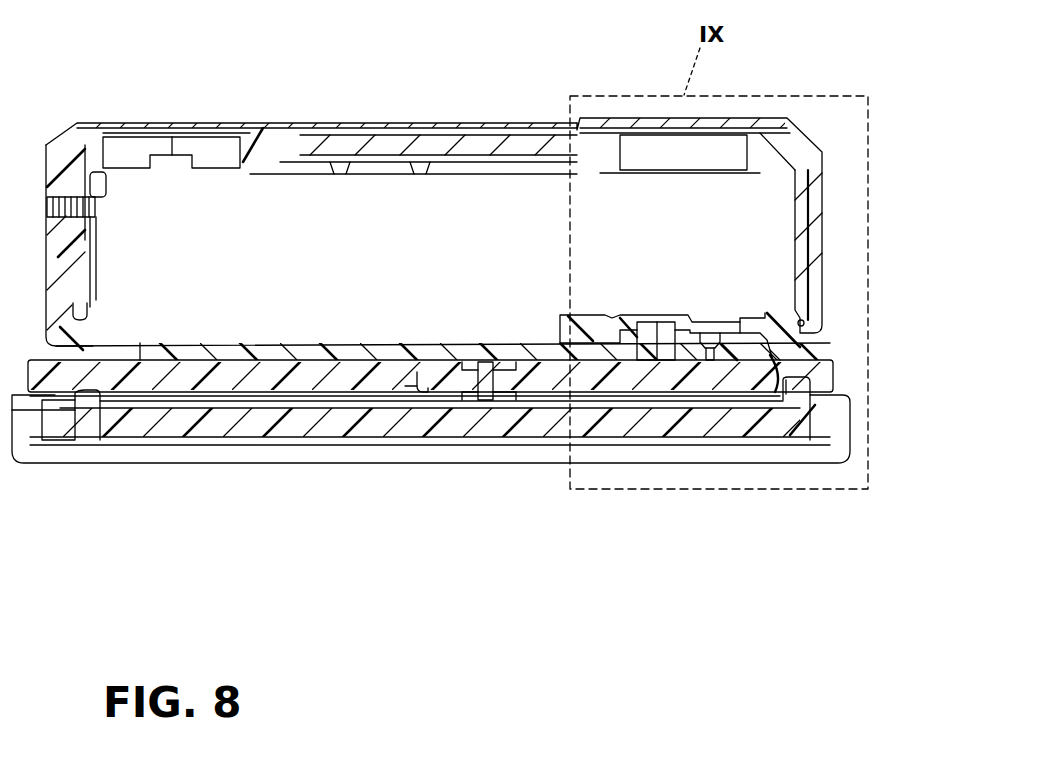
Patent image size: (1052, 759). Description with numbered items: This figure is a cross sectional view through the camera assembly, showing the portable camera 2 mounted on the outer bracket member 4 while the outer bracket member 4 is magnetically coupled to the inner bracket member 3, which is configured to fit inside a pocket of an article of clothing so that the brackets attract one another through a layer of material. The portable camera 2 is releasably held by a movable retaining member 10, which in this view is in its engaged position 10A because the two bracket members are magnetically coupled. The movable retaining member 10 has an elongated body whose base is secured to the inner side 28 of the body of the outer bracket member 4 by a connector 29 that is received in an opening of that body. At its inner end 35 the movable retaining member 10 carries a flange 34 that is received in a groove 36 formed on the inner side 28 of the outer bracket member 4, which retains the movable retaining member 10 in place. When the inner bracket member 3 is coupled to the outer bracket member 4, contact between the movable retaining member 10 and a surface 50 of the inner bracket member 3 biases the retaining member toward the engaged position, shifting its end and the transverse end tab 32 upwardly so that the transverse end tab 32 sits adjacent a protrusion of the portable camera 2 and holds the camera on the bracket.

The portable camera 2 is at (248, 116).
The inner bracket member 3 is at (864, 440).
The outer bracket member 4 is at (842, 368).
The movable retaining member 10 is at (786, 347).
The engaged position 10A is at (780, 370).
The inner side 28 is at (325, 392).
The connector 29 is at (497, 398).
The transverse end tab 32 is at (778, 357).
The flange 34 is at (417, 373).
The inner end 35 is at (405, 400).
The groove 36 is at (408, 386).
The surface 50 is at (792, 377).